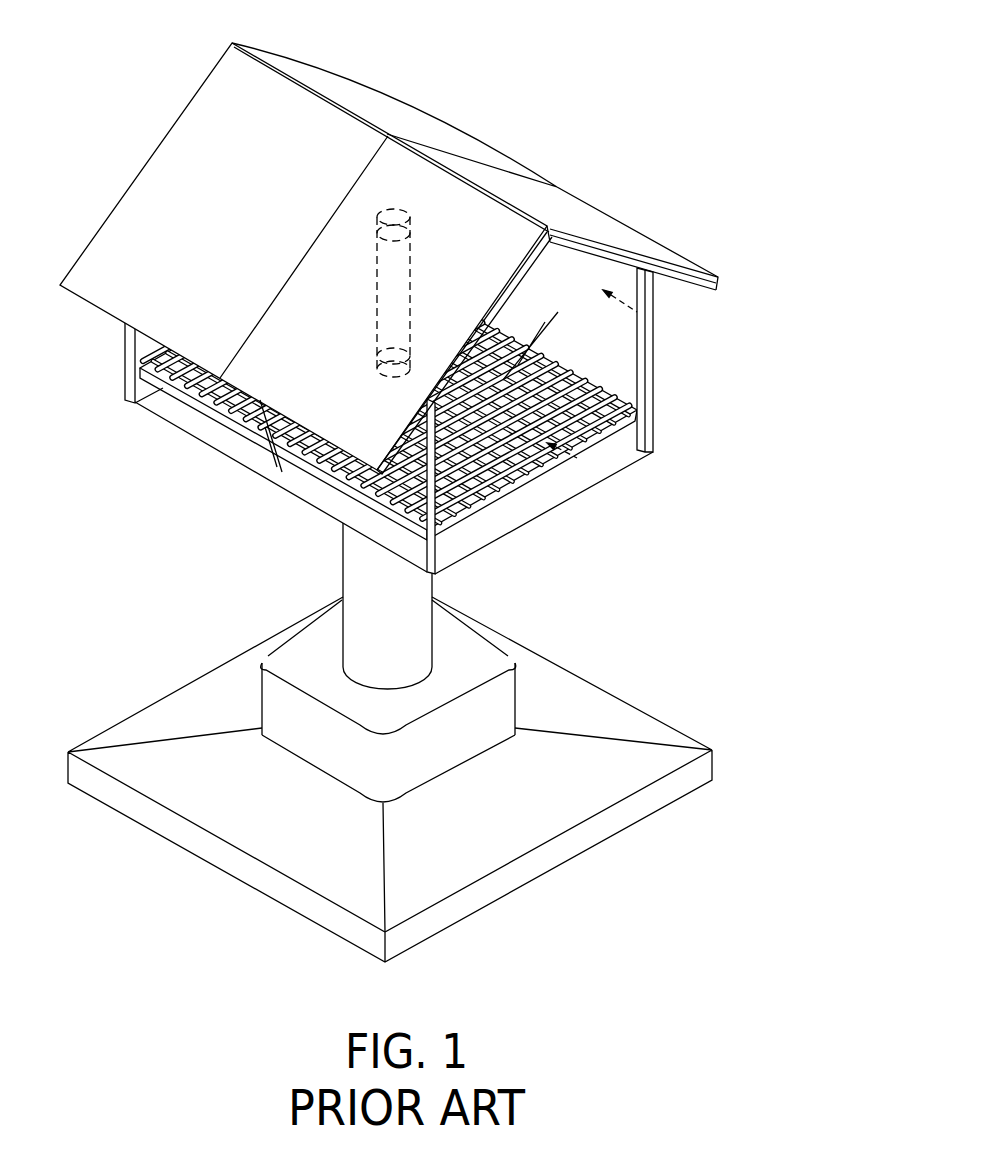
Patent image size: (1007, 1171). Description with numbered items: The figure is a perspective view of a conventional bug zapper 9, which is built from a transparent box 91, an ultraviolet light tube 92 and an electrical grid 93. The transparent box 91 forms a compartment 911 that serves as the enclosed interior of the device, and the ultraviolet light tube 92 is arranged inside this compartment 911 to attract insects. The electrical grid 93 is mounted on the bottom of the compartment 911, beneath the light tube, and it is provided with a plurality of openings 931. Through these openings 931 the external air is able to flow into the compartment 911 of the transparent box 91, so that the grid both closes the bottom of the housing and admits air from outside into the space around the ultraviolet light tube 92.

The bug zapper 9 is at (402, 483).
The transparent box 91 is at (402, 308).
The compartment 911 is at (660, 318).
The ultraviolet light tube 92 is at (410, 240).
The electrical grid 93 is at (440, 394).
The openings 931 is at (580, 465).